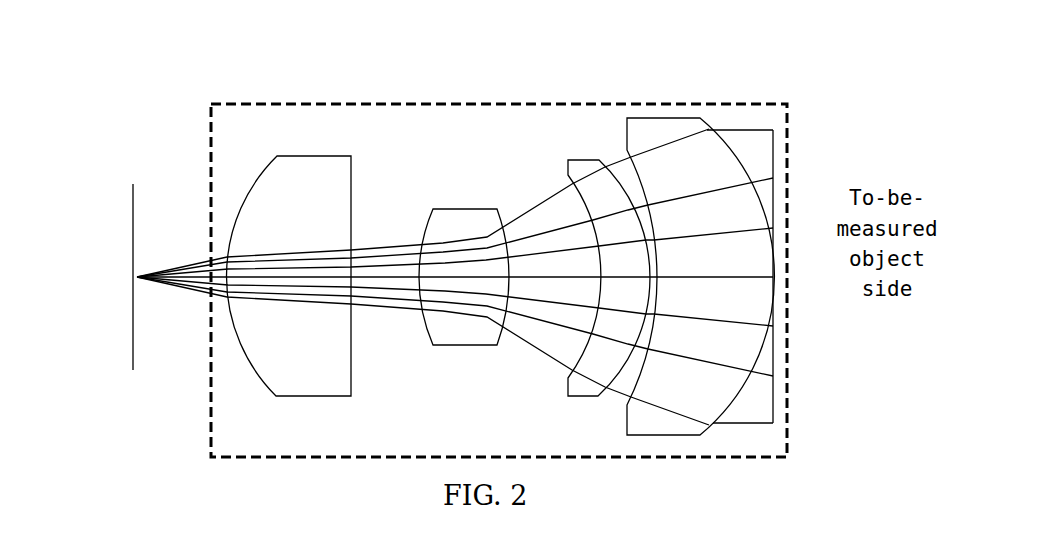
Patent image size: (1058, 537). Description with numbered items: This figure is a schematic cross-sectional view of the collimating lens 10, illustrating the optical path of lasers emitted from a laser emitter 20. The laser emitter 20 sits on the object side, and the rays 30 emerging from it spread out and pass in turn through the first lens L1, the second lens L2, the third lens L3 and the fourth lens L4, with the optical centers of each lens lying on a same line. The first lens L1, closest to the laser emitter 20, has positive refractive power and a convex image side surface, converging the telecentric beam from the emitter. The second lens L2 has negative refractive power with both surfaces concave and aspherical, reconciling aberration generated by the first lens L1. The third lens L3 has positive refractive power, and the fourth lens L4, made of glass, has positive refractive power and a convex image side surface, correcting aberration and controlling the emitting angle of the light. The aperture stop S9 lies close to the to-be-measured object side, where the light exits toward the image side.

The collimating lens 10 is at (211, 137).
The laser emitter 20 is at (133, 202).
The light beam / rays 30 is at (202, 278).
The first lens L1 is at (307, 156).
The second lens L2 is at (471, 209).
The third lens L3 is at (585, 160).
The fourth lens L4 is at (671, 118).
The aperture stop S9 is at (778, 145).